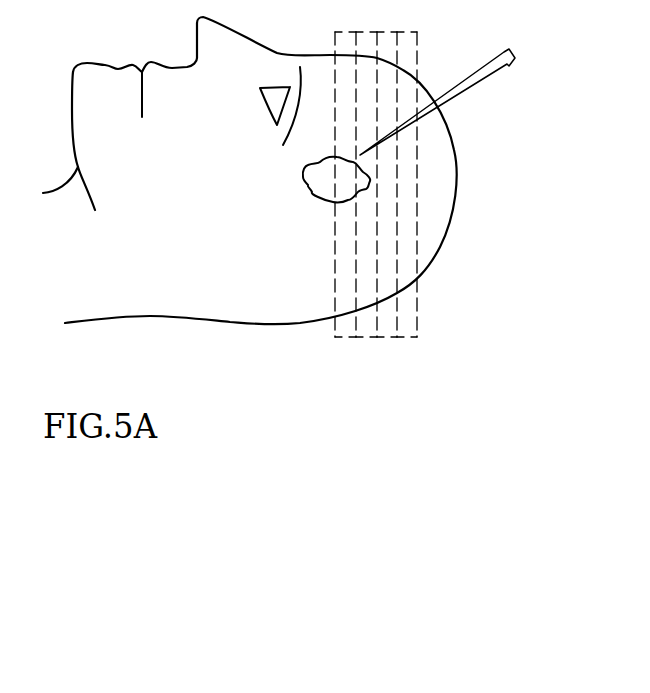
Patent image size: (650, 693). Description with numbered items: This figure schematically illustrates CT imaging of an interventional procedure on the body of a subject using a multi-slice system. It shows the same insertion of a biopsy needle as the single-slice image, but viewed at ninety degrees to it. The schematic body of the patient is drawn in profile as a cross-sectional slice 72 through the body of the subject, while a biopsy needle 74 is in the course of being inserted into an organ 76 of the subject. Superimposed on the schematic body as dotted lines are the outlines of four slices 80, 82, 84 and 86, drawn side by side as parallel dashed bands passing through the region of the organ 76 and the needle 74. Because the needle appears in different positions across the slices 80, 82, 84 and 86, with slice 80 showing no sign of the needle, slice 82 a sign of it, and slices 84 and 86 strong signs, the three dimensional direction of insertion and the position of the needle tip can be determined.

The cross-sectional slice 72 is at (118, 67).
The biopsy needle 74 is at (506, 68).
The organ 76 is at (302, 180).
The slice 80 is at (345, 339).
The slice 82 is at (363, 333).
The slice 84 is at (383, 337).
The slice 86 is at (412, 338).